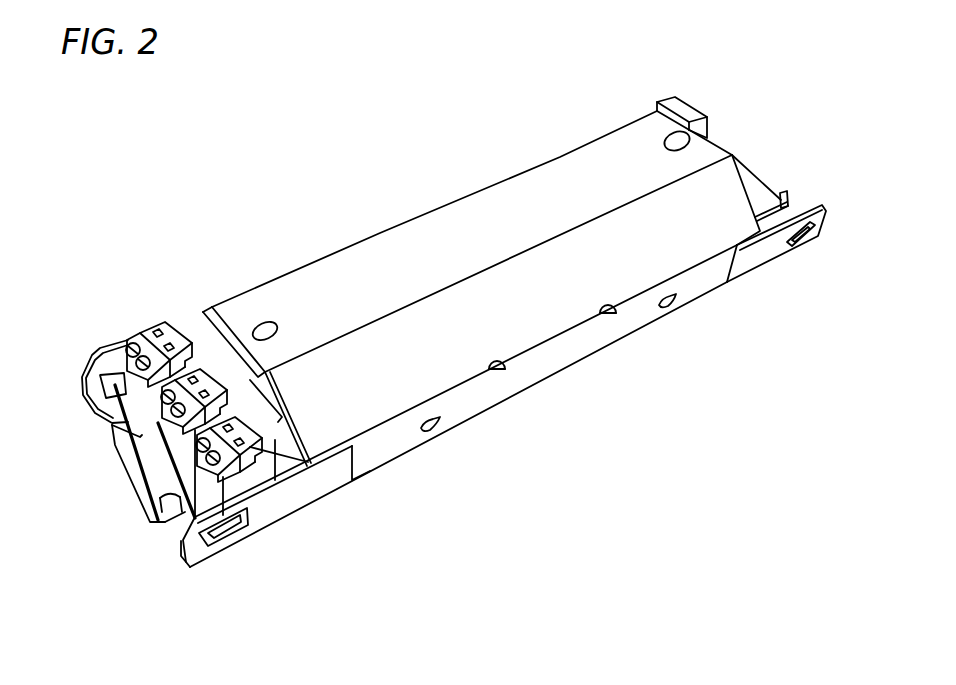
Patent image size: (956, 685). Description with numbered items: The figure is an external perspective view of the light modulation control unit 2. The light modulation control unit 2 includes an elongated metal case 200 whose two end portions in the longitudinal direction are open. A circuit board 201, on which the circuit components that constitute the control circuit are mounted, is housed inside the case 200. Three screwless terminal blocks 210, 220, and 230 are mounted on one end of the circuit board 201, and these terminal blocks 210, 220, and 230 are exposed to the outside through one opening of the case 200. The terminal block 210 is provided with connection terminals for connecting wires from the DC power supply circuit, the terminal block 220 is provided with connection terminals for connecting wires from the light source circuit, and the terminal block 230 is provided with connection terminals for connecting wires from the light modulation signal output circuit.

The light modulation control unit 2 is at (490, 458).
The case 200 is at (503, 332).
The circuit board 201 is at (180, 451).
The terminal block 210 is at (103, 381).
The terminal block 220 is at (129, 369).
The terminal block 230 is at (174, 479).